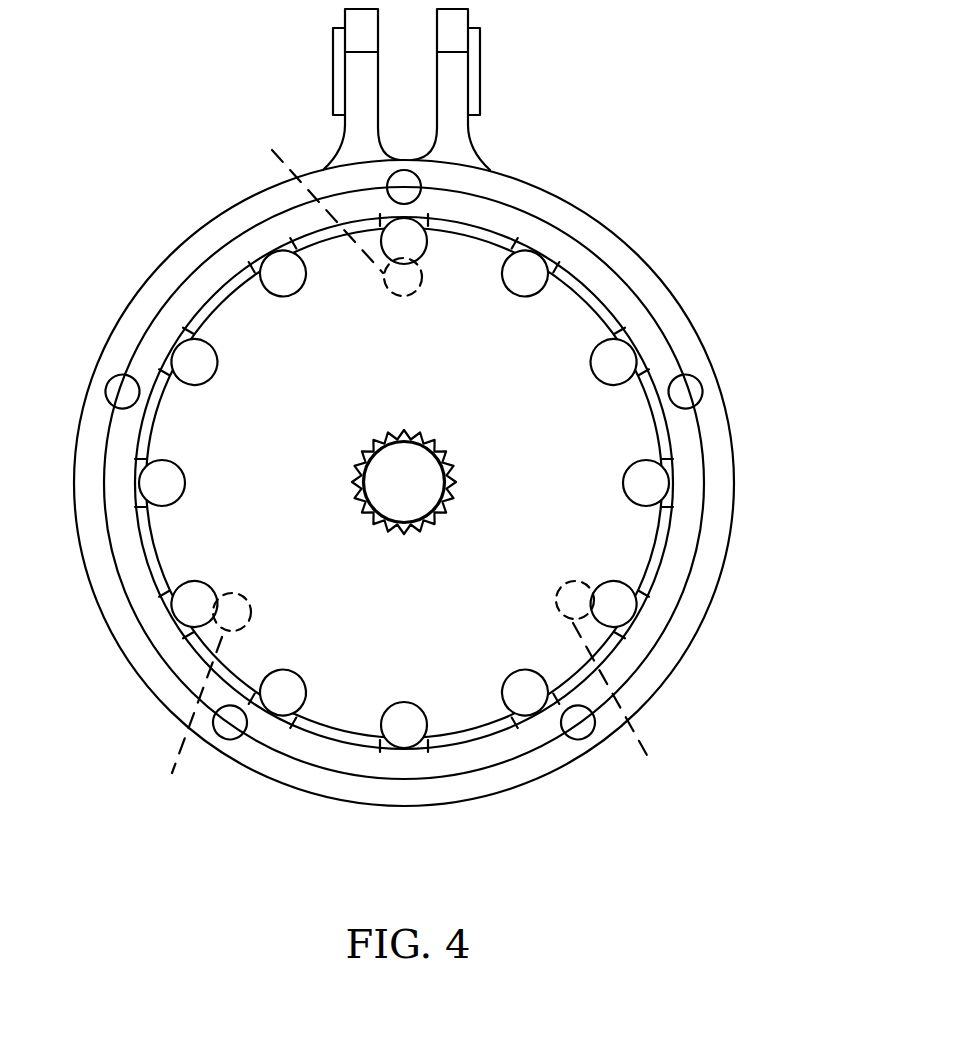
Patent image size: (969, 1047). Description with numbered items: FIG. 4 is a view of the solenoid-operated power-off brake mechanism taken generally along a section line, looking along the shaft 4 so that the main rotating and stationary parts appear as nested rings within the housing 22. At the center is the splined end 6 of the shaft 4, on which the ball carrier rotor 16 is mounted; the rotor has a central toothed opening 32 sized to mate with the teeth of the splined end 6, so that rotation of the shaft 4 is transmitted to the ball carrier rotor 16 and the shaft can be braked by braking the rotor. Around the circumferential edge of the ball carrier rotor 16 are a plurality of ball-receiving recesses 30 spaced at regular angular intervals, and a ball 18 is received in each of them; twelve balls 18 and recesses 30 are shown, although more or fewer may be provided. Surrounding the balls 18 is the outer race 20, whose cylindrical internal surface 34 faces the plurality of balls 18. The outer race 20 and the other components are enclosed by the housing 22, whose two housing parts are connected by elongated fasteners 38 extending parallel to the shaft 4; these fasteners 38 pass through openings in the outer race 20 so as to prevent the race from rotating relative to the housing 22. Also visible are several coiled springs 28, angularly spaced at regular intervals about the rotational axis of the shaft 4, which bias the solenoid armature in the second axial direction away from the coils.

The shaft 4 is at (420, 507).
The splined end 6 is at (447, 506).
The ball carrier rotor 16 is at (422, 373).
The balls 18 is at (195, 362).
The outer race 20 is at (165, 330).
The housing 22 is at (542, 192).
The springs 28 is at (424, 465).
The ball-receiving recesses 30 is at (420, 266).
The central toothed opening 32 is at (368, 466).
The cylindrical internal surface 34 is at (663, 420).
The elongated fasteners 38 is at (230, 243).